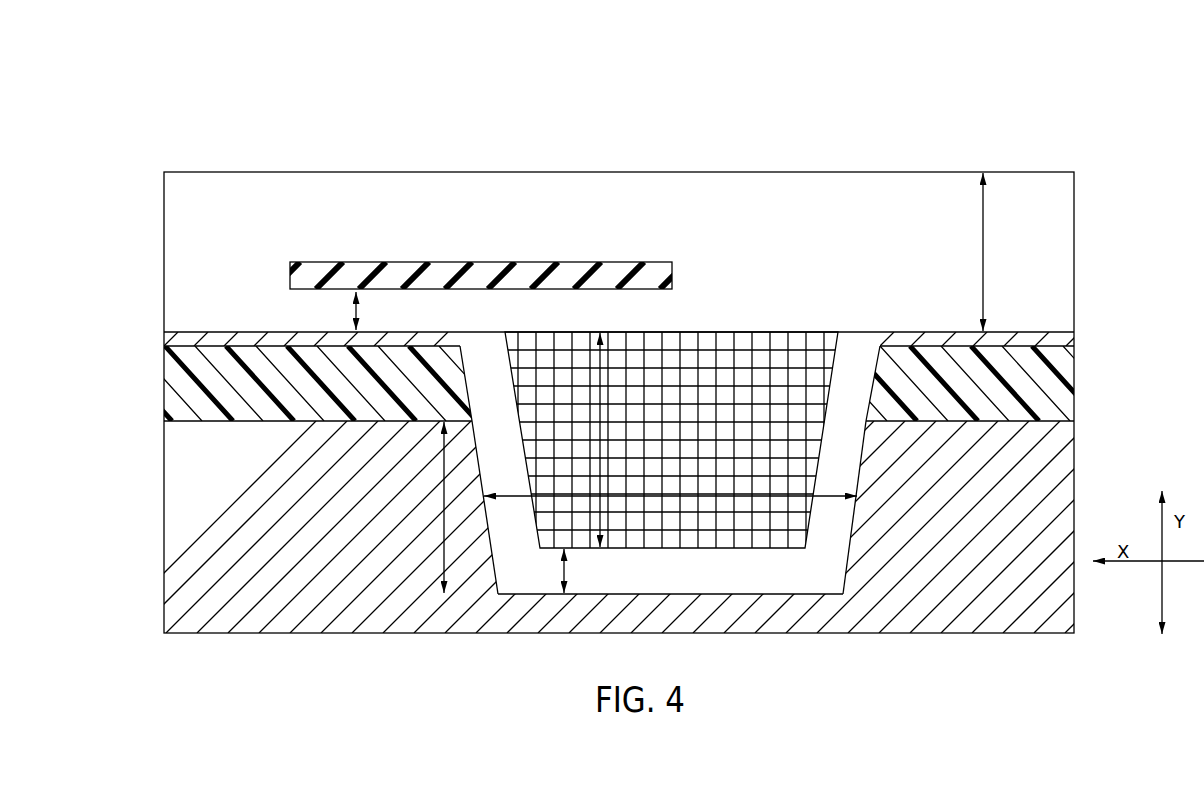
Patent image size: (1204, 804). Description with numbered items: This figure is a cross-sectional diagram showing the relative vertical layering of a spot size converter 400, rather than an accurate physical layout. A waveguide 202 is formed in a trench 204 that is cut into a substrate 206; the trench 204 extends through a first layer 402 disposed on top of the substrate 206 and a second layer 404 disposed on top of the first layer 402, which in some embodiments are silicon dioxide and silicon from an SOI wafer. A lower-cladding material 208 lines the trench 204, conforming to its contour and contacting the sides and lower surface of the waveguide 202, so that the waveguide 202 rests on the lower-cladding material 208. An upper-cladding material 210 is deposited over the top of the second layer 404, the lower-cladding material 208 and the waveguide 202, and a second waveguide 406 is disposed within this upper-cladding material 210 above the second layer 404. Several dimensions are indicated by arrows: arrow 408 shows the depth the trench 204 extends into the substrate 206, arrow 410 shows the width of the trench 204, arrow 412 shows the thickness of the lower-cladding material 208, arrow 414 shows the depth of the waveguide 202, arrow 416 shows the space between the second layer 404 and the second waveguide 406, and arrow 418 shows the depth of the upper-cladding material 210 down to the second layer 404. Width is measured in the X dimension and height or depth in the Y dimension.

The spot size converter 400 is at (1032, 116).
The waveguide 202 is at (663, 452).
The trench 204 is at (850, 553).
The substrate 206 is at (1029, 618).
The lower-cladding material 208 is at (828, 466).
The upper-cladding material 210 is at (678, 244).
The first layer 402 is at (963, 392).
The second layer 404 is at (1072, 342).
The second waveguide 406 is at (328, 262).
The arrow 408 is at (445, 573).
The arrow 410 is at (710, 500).
The arrow 412 is at (568, 571).
The arrow 414 is at (597, 407).
The arrow 416 is at (362, 318).
The arrow 418 is at (985, 253).